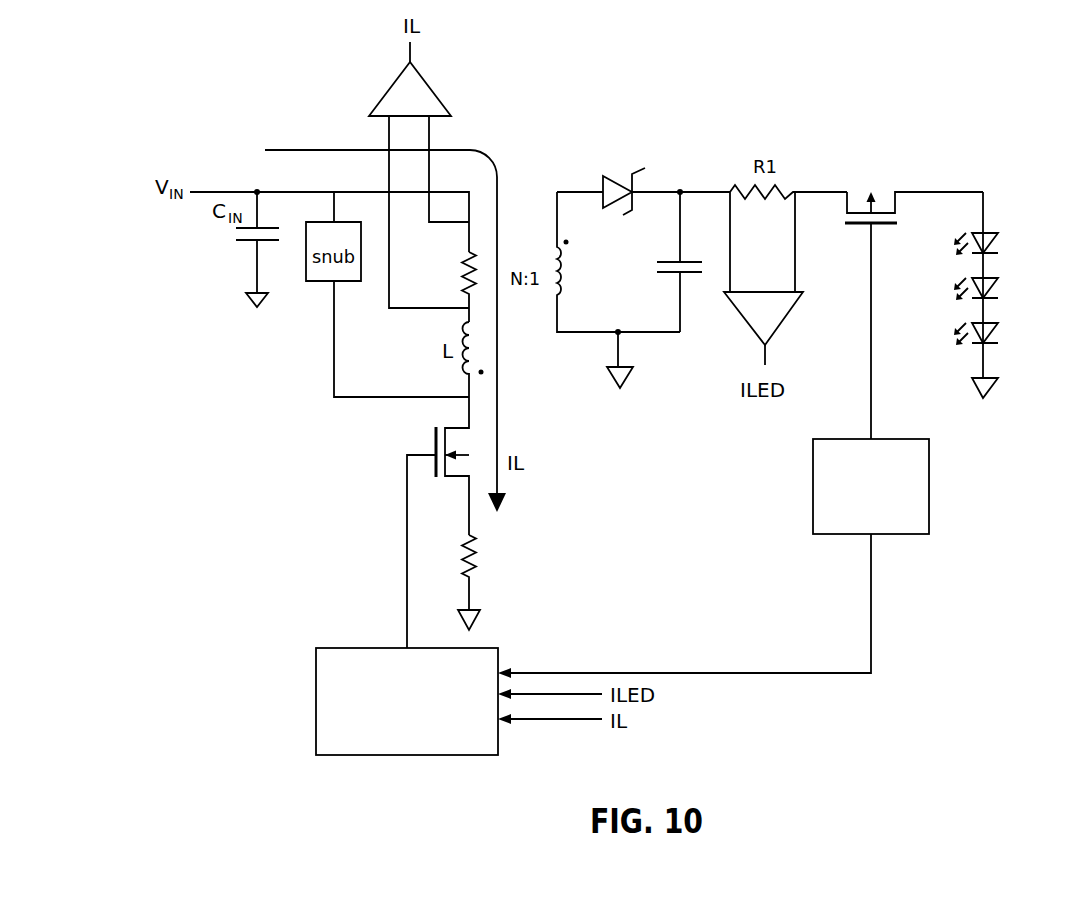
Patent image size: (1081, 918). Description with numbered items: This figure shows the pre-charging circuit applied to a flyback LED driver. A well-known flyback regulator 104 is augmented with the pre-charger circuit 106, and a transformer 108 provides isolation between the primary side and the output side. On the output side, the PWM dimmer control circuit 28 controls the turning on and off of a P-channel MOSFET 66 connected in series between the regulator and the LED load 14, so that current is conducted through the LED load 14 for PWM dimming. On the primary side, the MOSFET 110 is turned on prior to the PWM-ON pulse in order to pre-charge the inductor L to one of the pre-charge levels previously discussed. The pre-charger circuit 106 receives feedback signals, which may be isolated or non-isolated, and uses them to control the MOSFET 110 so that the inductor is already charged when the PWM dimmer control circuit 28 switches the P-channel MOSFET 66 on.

The flyback regulator 104 is at (663, 129).
The transformer 108 is at (532, 198).
The P-channel MOSFET 66 is at (882, 193).
The LED load 14 is at (1012, 290).
The PWM dimmer control circuit 28 is at (896, 439).
The MOSFET 110 is at (457, 480).
The pre-charger circuit 106 is at (316, 675).